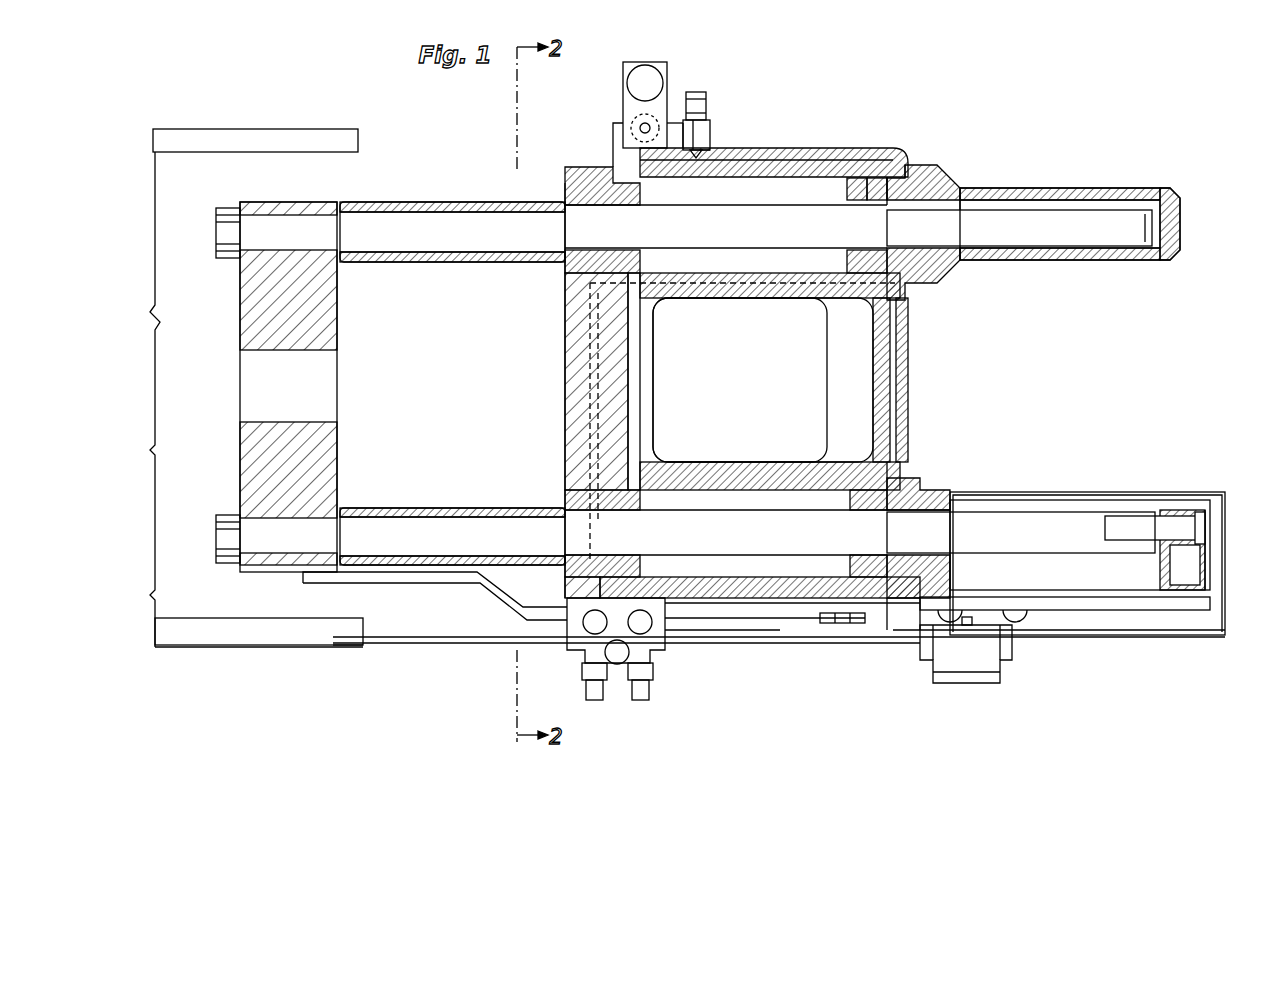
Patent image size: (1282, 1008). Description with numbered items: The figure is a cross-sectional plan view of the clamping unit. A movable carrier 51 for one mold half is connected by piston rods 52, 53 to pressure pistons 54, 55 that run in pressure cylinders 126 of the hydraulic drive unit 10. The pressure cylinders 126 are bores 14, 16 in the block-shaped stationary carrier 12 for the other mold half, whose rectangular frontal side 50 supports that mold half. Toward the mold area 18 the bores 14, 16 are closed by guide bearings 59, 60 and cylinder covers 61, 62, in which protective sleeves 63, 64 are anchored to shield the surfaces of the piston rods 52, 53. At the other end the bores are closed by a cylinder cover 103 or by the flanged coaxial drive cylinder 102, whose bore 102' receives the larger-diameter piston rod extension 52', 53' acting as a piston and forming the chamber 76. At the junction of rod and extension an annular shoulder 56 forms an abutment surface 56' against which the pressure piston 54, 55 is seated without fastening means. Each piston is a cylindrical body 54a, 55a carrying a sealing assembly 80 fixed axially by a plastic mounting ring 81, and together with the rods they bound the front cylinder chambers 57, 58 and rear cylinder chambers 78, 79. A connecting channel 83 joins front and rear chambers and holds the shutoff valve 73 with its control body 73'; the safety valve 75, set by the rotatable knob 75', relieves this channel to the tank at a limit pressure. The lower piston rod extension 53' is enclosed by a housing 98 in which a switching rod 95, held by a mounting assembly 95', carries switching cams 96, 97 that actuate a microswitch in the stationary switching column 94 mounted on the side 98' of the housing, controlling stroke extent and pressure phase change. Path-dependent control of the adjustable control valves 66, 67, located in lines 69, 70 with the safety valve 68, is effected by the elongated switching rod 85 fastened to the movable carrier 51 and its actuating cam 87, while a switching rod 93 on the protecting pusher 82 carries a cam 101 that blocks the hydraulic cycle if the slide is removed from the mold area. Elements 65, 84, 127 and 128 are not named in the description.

The hydraulic drive unit 10 is at (775, 117).
The stationary carrier 12 is at (879, 605).
The bore 14 is at (822, 188).
The bore 16 is at (727, 580).
The mold area 18 is at (355, 447).
The frontal side 50 is at (565, 322).
The movable carrier 51 is at (337, 307).
The piston rod 52 is at (613, 207).
The piston rod extension 52' is at (1019, 191).
The piston rod 53 is at (613, 512).
The piston rod extension 53' is at (1021, 499).
The pressure piston 54 is at (887, 178).
The cylindrical body 54a is at (847, 258).
The pressure piston 55 is at (900, 470).
The cylindrical body 55a is at (850, 495).
The annular shoulder 56 is at (941, 326).
The abutment surface 56' is at (849, 566).
The front cylinder chamber 57 is at (800, 190).
The front cylinder chamber 58 is at (770, 562).
The guide bearing 59 is at (606, 192).
The guide bearing 60 is at (588, 488).
The cylinder cover 61 is at (575, 182).
The cylinder cover 62 is at (592, 498).
The protective sleeve 63 is at (455, 201).
The protective sleeve 64 is at (512, 506).
The valve block 65 is at (588, 657).
The adjustable control valve 66 is at (590, 627).
The adjustable control valve 67 is at (645, 630).
The safety valve 68 is at (620, 652).
The line 69 is at (592, 690).
The line 70 is at (646, 693).
The shutoff valve 73 is at (634, 100).
The control body 73' is at (644, 79).
The safety valve 75 is at (705, 98).
The rotatable knob 75' is at (683, 94).
The chamber 76 is at (1150, 192).
The rear cylinder chamber 78 is at (897, 172).
The rear cylinder chamber 79 is at (892, 610).
The sealing assembly 80 is at (878, 178).
The plastic mounting ring 81 is at (856, 178).
The protecting pusher 82 is at (290, 140).
The connecting channel 83 is at (755, 160).
The piston 84 is at (895, 336).
The switching rod 85 is at (401, 572).
The actuating cam 87 is at (840, 624).
The switching rod 93 is at (370, 647).
The switching column 94 is at (980, 656).
The switching rod 95 is at (1065, 590).
The mounting assembly 95' is at (1239, 550).
The switching cam 96 is at (948, 626).
The switching cam 97 is at (1016, 618).
The housing 98 is at (1087, 540).
The side of cover 98' is at (1059, 664).
The cam 101 is at (388, 646).
The drive cylinder 102 is at (1070, 198).
The bore 102' is at (1060, 281).
The cylinder cover 103 is at (935, 478).
The pressure cylinder 126 is at (740, 285).
The passage 127 is at (710, 150).
The ring 128 is at (938, 278).